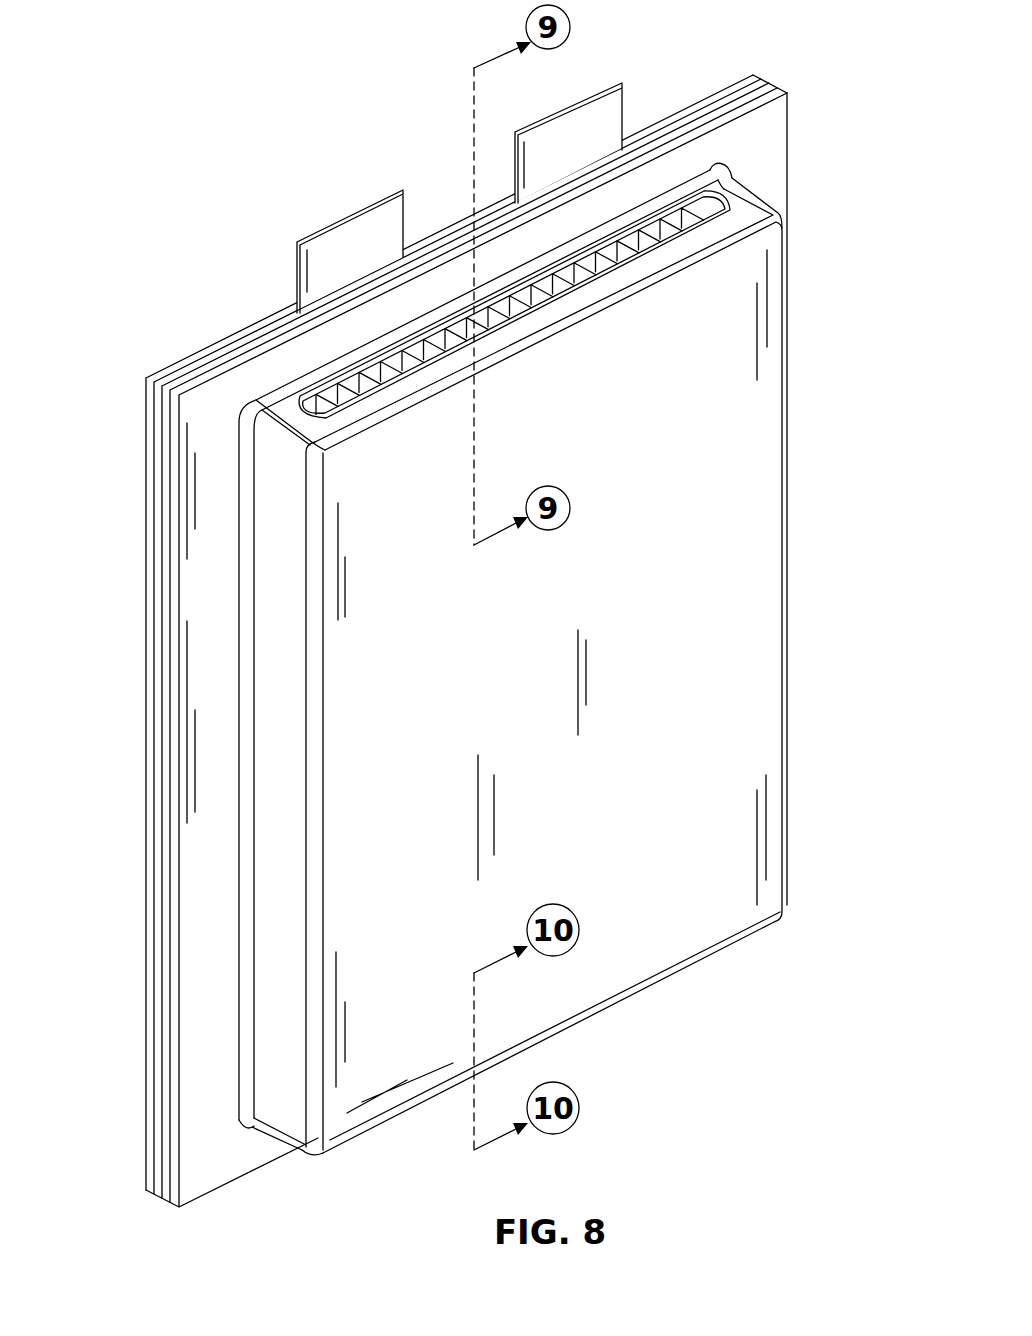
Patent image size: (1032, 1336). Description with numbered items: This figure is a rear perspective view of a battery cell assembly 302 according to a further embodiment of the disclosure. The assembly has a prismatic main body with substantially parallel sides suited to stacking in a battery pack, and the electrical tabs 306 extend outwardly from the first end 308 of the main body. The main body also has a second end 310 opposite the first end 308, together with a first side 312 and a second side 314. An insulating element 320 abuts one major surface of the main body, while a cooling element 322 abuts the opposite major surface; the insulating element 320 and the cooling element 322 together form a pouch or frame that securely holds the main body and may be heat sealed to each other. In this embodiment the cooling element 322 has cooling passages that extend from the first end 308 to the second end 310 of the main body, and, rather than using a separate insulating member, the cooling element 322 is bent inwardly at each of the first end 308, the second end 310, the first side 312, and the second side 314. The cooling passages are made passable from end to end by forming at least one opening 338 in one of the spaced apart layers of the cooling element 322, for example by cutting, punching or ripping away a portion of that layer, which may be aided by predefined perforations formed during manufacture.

The battery cell assembly 302 is at (477, 608).
The electrical tabs 306 is at (383, 228).
The first end 308 is at (477, 641).
The second end 310 is at (547, 659).
The first side 312 is at (816, 431).
The second side 314 is at (124, 792).
The insulating element 320 is at (142, 558).
The cooling element 322 is at (456, 666).
The opening 338 is at (746, 186).